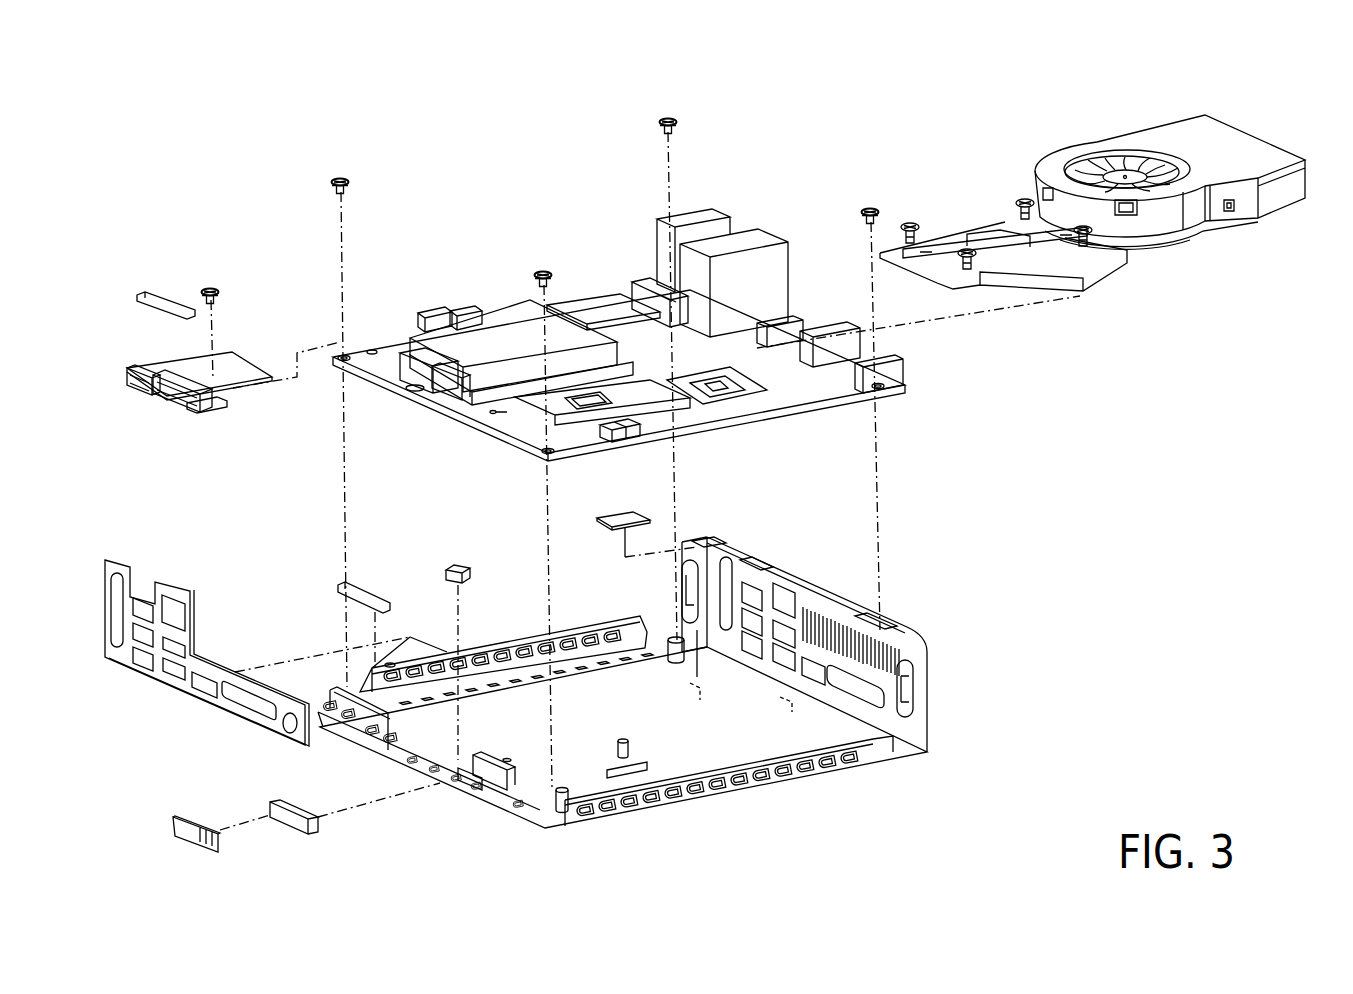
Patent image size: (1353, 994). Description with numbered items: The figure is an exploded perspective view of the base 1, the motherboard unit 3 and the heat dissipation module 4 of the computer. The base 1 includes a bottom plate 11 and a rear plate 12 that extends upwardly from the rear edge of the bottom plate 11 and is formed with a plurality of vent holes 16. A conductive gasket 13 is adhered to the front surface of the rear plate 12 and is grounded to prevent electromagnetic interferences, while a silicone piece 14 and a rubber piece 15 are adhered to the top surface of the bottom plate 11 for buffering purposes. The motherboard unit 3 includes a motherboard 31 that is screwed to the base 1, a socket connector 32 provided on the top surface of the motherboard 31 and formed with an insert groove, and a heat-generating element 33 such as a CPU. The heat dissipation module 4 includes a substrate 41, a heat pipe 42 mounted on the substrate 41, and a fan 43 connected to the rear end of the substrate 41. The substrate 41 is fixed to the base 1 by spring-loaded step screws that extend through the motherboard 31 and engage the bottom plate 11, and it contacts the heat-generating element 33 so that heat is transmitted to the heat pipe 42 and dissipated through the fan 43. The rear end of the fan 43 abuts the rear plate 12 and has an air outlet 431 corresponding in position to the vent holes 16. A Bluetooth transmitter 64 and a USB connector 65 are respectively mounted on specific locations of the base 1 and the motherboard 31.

The base 1 is at (837, 789).
The bottom plate 11 is at (650, 717).
The rear plate 12 is at (907, 643).
The conductive gasket 13 is at (187, 683).
The silicone piece 14 is at (622, 518).
The rubber piece 15 is at (458, 565).
The vent holes 16 is at (835, 631).
The motherboard unit 3 is at (503, 283).
The motherboard 31 is at (800, 387).
The socket connector 32 is at (648, 295).
The heat-generating element 33 is at (730, 383).
The heat dissipation module 4 is at (1170, 265).
The substrate 41 is at (1005, 265).
The heat pipe 42 is at (950, 247).
The fan 43 is at (1083, 138).
The air outlet 431 is at (1257, 140).
The Bluetooth transmitter 64 is at (190, 833).
The USB connector 65 is at (163, 413).